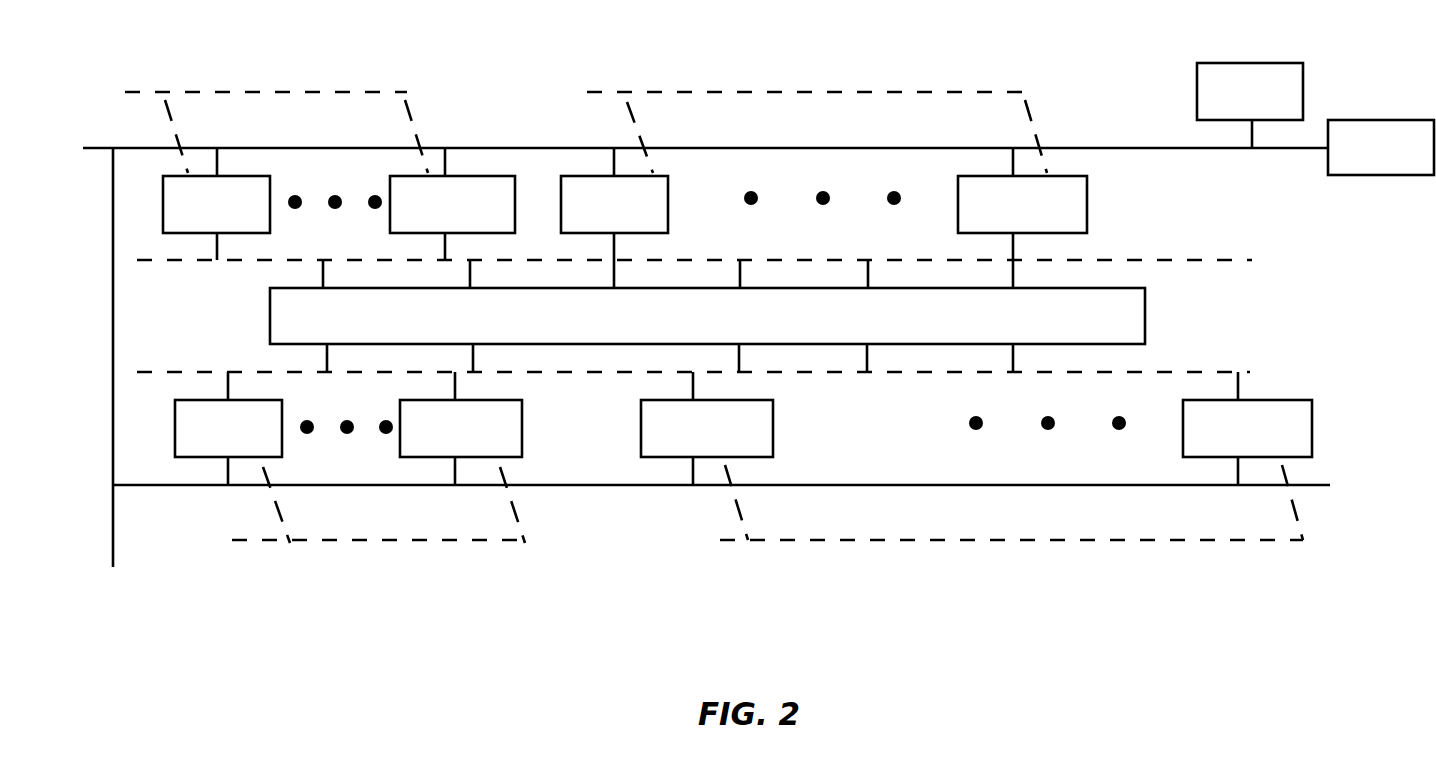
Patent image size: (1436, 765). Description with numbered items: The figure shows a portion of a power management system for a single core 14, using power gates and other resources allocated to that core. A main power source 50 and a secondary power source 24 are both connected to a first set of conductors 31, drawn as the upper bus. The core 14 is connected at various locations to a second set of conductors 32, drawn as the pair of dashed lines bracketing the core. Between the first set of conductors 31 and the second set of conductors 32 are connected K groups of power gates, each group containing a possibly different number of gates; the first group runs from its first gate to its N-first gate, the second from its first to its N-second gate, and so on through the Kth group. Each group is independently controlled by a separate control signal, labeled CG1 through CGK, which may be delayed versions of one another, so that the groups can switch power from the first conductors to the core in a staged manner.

The core 14 is at (707, 316).
The secondary power source 24 is at (1250, 105).
The main power source 50 is at (1381, 147).
The first set of conductors 31 is at (1147, 147).
The second set of conductors 32 is at (1220, 260).